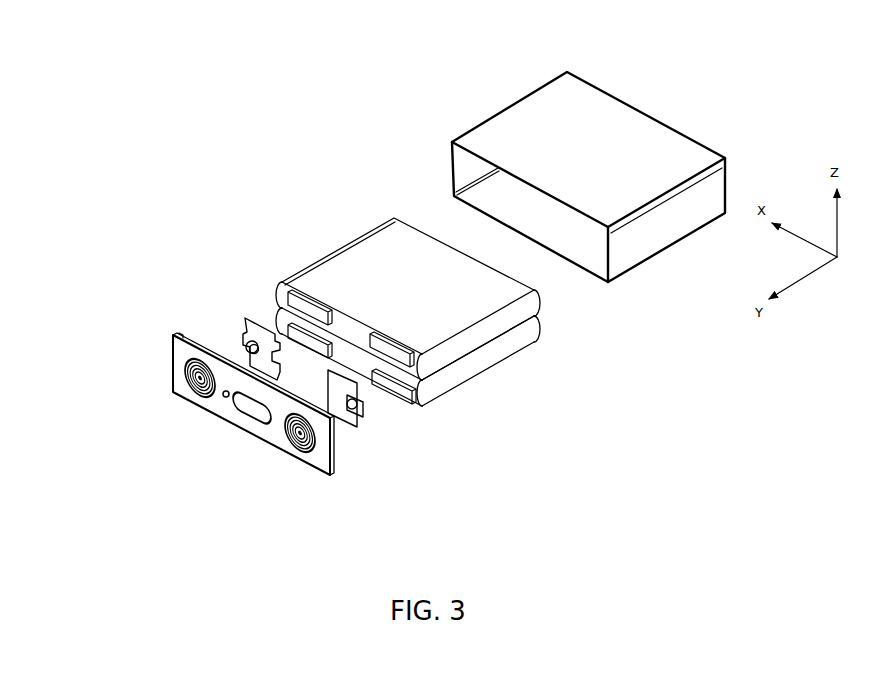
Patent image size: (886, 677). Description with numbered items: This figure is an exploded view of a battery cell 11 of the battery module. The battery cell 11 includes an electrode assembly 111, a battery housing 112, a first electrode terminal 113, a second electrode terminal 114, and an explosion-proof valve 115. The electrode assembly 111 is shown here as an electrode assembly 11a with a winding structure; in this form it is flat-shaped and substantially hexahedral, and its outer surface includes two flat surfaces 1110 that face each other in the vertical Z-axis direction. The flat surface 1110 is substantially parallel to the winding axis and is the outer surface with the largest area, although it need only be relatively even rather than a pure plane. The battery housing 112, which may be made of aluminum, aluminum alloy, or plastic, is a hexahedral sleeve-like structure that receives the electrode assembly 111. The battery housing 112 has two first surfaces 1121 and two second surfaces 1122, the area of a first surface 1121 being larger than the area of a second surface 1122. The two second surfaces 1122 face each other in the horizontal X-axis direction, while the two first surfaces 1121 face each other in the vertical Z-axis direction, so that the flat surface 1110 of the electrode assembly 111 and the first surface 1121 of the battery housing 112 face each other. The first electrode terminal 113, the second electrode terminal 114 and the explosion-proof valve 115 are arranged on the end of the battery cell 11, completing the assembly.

The battery cell 11 is at (590, 435).
The electrode assembly 111 is at (402, 444).
The flat surface 1110 is at (355, 277).
The electrode assembly with a winding structure 11a is at (286, 278).
The battery housing 112 is at (433, 142).
The first surface 1121 is at (521, 128).
The second surface 1122 is at (642, 242).
The first electrode terminal 113 is at (197, 395).
The second electrode terminal 114 is at (297, 447).
The explosion-proof valve 115 is at (247, 412).